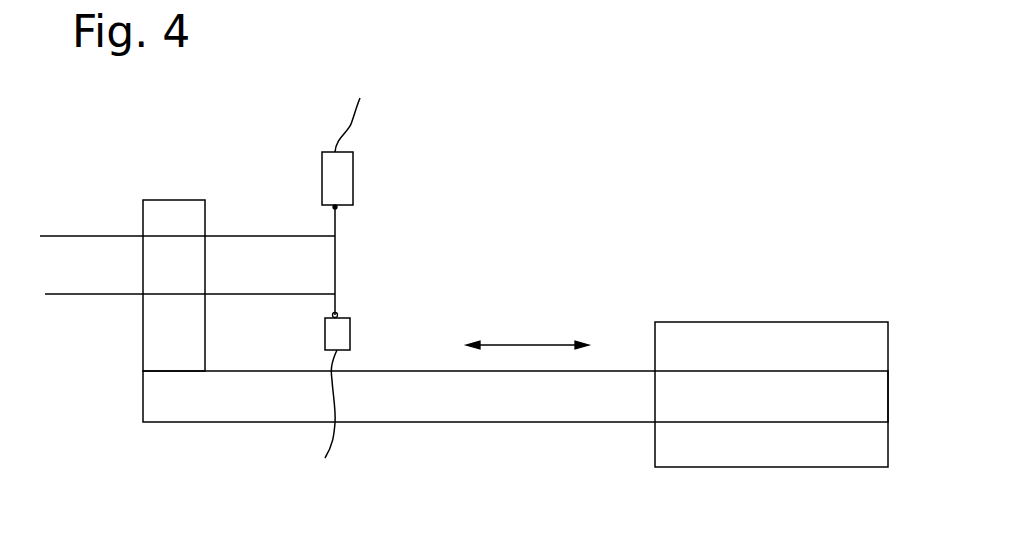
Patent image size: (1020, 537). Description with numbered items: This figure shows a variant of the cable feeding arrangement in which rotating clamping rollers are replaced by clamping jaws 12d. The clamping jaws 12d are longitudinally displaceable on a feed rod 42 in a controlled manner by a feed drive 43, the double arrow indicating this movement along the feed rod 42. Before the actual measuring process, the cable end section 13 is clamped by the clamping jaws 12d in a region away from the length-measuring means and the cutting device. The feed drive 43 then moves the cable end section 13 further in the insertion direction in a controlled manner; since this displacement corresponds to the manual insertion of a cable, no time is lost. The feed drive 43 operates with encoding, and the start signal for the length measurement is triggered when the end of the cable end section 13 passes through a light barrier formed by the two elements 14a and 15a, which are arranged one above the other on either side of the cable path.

The clamping jaws 12d is at (173, 215).
The cable end section 13 is at (250, 255).
The light barrier 15a is at (342, 175).
The light barrier 14a is at (342, 328).
The feed rod 42 is at (433, 385).
The feed drive 43 is at (701, 343).